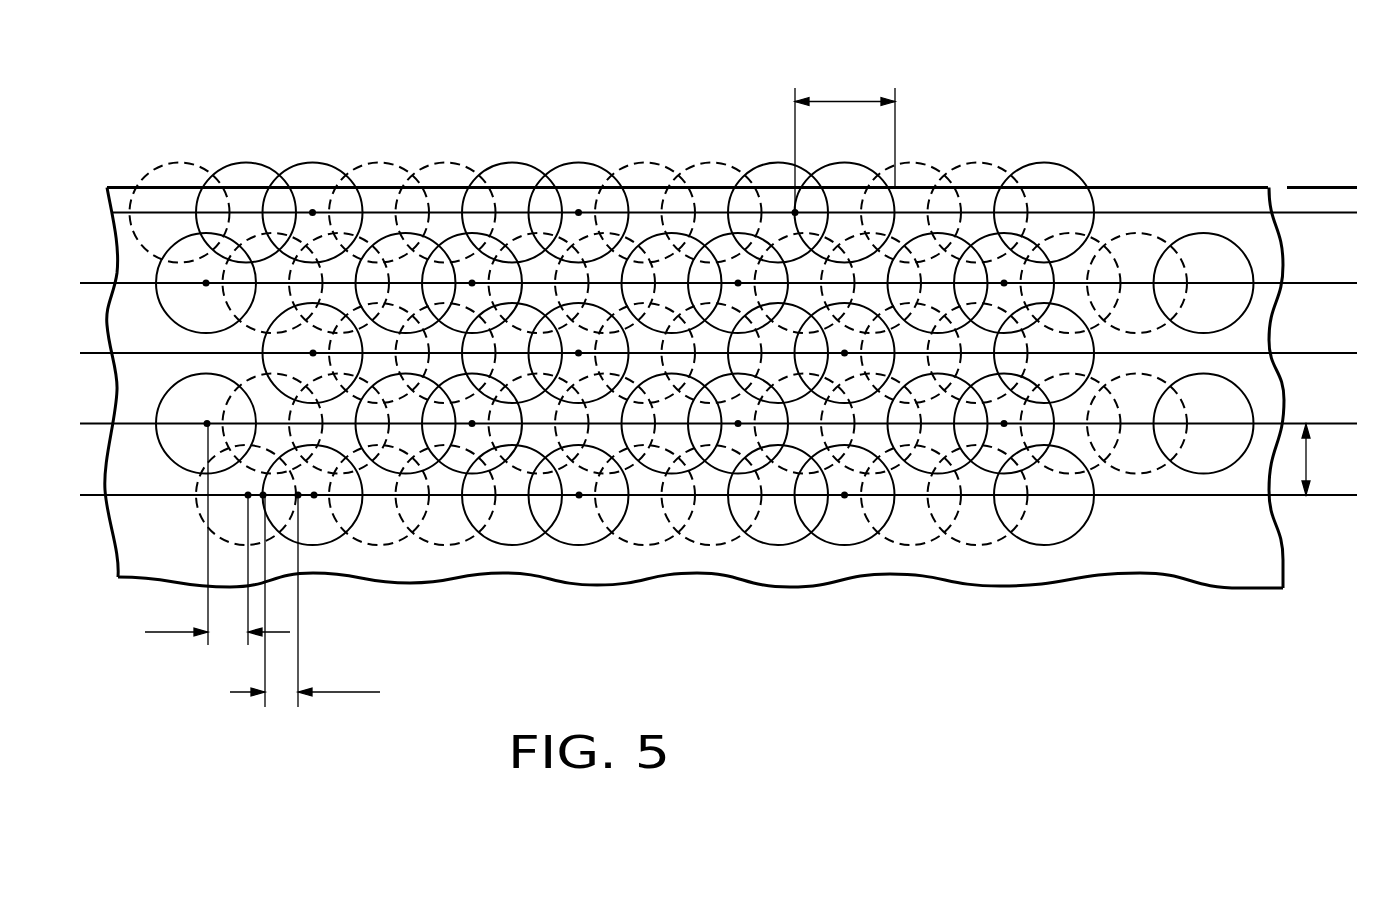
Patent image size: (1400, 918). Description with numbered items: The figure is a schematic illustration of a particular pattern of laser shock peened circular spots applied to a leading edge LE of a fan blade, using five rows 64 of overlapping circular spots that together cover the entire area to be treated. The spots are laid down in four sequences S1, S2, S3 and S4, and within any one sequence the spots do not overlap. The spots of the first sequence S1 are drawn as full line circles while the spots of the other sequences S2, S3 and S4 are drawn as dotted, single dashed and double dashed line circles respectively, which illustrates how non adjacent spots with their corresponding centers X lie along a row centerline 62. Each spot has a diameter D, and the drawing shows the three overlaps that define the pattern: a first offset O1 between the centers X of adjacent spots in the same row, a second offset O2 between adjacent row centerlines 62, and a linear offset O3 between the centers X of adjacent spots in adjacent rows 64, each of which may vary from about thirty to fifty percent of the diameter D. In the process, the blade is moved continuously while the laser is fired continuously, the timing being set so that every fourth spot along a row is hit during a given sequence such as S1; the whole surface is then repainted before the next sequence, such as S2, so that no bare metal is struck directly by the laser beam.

The row of overlapping laser shock peened circular spots 64 is at (120, 163).
The row centerline 62 is at (1312, 211).
The first sequence S1 is at (313, 162).
The second sequence S2 is at (367, 162).
The third sequence S3 is at (455, 162).
The fourth sequence S4 is at (517, 162).
The center X is at (206, 284).
The diameter D is at (843, 101).
The first offset O1 is at (357, 693).
The second offset O2 is at (1307, 457).
The linear offset O3 is at (165, 633).
The leading edge LE is at (1335, 187).